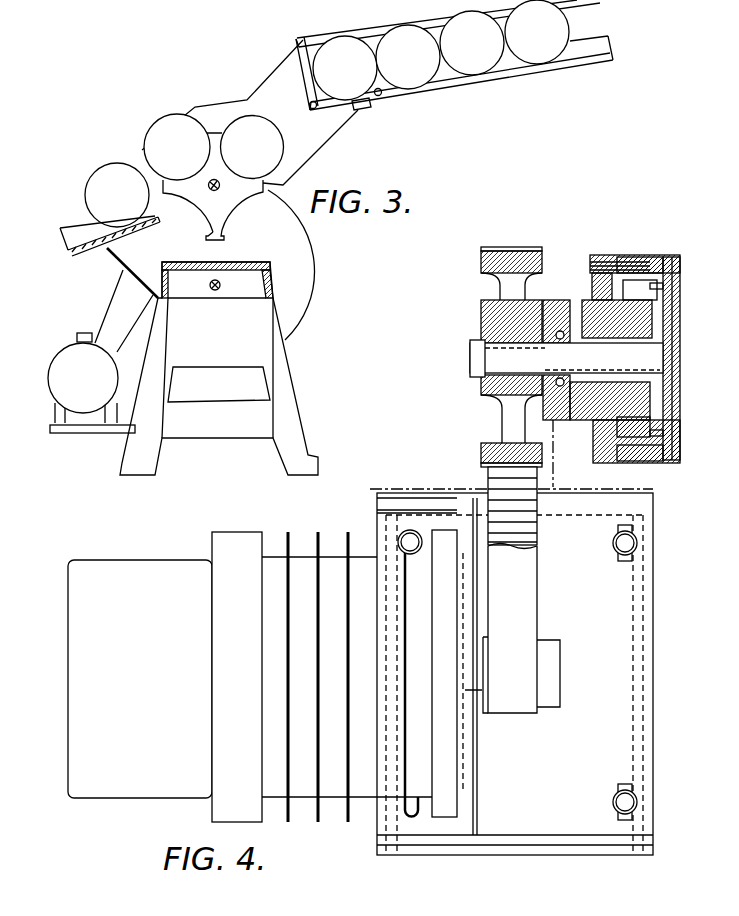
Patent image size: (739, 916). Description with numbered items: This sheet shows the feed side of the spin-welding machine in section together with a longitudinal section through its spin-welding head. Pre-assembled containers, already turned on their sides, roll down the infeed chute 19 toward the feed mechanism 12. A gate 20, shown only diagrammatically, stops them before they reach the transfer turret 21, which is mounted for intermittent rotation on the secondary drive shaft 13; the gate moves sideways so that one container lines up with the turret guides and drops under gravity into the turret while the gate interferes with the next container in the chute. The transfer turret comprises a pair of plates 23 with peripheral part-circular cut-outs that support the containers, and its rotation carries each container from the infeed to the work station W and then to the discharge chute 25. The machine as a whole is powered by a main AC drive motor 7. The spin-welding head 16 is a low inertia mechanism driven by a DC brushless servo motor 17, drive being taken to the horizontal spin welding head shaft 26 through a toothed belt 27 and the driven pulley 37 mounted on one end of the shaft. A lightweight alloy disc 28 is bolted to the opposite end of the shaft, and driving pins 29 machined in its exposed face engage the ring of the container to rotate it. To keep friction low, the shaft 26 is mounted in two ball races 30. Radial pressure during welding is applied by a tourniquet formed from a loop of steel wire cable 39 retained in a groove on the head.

In FIG. 3, the work station W is at (165, 142).
In FIG. 3, the main AC drive motor 7 is at (66, 357).
In FIG. 3, the feed mechanism 12 is at (197, 92).
In FIG. 3, the secondary drive shaft 13 is at (210, 191).
In FIG. 4, the spin-welding head 16 is at (597, 245).
In FIG. 4, the servo motor 17 is at (105, 790).
In FIG. 3, the infeed chute 19 is at (527, 85).
In FIG. 3, the gate 20 is at (368, 103).
In FIG. 3, the transfer turret 21 is at (238, 188).
In FIG. 3, the plates 23 is at (222, 230).
In FIG. 3, the discharge chute 25 is at (82, 252).
In FIG. 4, the spin welding head shaft 26 is at (492, 355).
In FIG. 4, the toothed belt 27 is at (497, 483).
In FIG. 4, the disc 28 is at (638, 272).
In FIG. 4, the driving pins 29 is at (667, 285).
In FIG. 4, the ball races 30 is at (570, 300).
In FIG. 4, the driven pulley 37 is at (513, 258).
In FIG. 4, the steel wire cable 39 is at (673, 265).